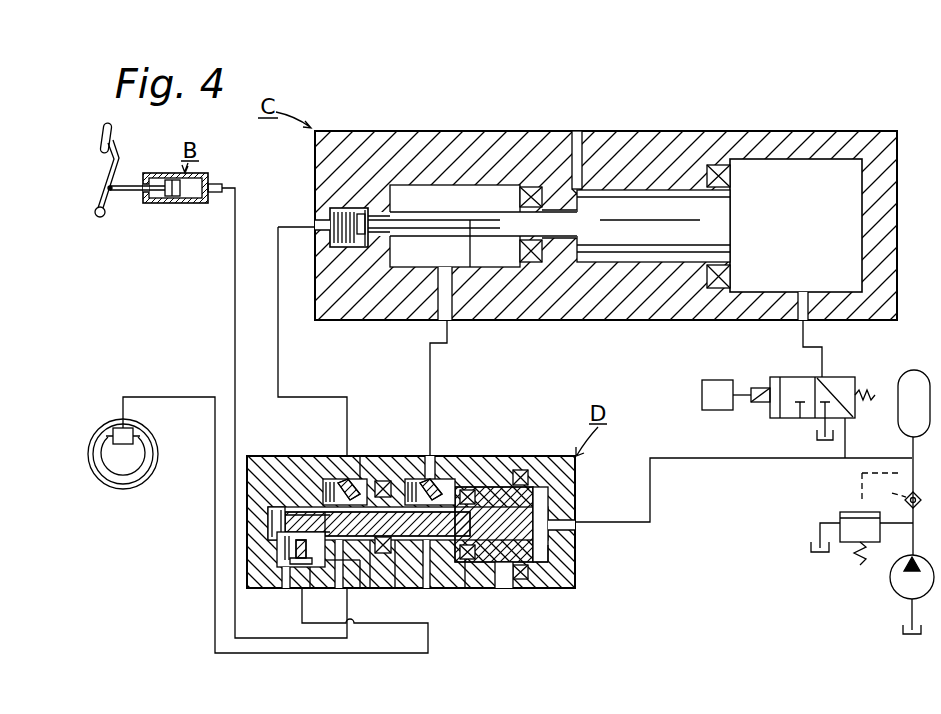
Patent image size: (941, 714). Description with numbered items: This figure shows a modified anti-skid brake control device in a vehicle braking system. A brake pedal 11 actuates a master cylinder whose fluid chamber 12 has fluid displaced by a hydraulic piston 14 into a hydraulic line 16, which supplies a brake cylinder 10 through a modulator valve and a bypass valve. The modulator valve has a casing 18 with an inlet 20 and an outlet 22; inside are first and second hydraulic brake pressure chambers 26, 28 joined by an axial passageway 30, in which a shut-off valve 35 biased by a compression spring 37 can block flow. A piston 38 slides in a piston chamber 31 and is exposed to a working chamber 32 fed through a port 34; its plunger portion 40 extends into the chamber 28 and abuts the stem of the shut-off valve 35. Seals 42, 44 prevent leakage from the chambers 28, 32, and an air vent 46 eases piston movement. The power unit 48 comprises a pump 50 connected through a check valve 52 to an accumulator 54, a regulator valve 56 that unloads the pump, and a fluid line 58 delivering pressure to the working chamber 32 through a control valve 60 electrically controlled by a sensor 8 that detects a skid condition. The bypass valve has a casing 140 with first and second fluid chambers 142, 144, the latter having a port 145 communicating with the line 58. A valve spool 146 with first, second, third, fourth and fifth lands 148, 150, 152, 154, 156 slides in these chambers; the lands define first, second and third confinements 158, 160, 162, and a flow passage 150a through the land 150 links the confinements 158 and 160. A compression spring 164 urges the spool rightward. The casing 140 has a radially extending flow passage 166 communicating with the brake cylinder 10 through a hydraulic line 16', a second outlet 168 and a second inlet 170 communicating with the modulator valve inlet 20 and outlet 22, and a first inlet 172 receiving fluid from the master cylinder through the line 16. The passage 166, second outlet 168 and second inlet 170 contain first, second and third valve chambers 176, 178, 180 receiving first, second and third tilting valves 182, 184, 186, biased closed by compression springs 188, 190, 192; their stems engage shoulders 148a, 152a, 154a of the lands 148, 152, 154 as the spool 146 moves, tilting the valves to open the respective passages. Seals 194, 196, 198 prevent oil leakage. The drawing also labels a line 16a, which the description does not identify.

The sensor 8 is at (725, 406).
The brake cylinder 10 is at (133, 430).
The brake pedal 11 is at (113, 135).
The fluid chamber 12 is at (192, 197).
The hydraulic piston 14 is at (168, 198).
The hydraulic line 16 is at (272, 413).
The hydraulic line 16' is at (275, 505).
The control line 16a is at (277, 227).
The casing 18 is at (452, 152).
The inlet 20 is at (330, 222).
The outlet 22 is at (447, 338).
The first hydraulic brake pressure chamber 26 is at (340, 245).
The second hydraulic brake pressure chamber 28 is at (488, 200).
The axial passageway 30 is at (372, 210).
The piston chamber 31 is at (640, 192).
The working chamber 32 is at (833, 168).
The port 34 is at (803, 333).
The shut-off valve 35 is at (358, 247).
The compression spring 37 is at (335, 213).
The piston 38 is at (660, 262).
The plunger portion 40 is at (488, 255).
The seal 42 is at (531, 190).
The seal 44 is at (718, 165).
The air vent 46 is at (578, 140).
The power unit 48 is at (899, 374).
The pump 50 is at (896, 590).
The check valve 52 is at (905, 497).
The accumulator 54 is at (900, 422).
The regulator valve 56 is at (850, 512).
The fluid line 58 is at (681, 458).
The control valve 60 is at (856, 372).
The casing 140 is at (345, 456).
The first fluid chamber 142 is at (441, 595).
The second fluid chamber 144 is at (550, 488).
The port 145 is at (550, 522).
The valve spool 146 is at (550, 540).
The first land 148 is at (285, 456).
The shoulder 148a is at (300, 456).
The second land 150 is at (355, 456).
The axially extending flow passage 150a is at (320, 574).
The third land 152 is at (360, 592).
The shoulder 152a is at (355, 592).
The fourth land 154 is at (520, 590).
The shoulder 154a is at (505, 600).
The fifth land 156 is at (560, 562).
The first confinement 158 is at (320, 458).
The second confinement 160 is at (285, 519).
The third confinement 162 is at (465, 600).
The compression spring 164 is at (268, 512).
The radially extending flow passage 166 is at (305, 572).
The second outlet 168 is at (385, 456).
The second inlet 170 is at (475, 456).
The first inlet 172 is at (340, 572).
The first valve chamber 176 is at (275, 558).
The second valve chamber 178 is at (365, 456).
The third valve chamber 180 is at (500, 500).
The first tilting valve 182 is at (286, 570).
The second tilting valve 184 is at (396, 456).
The third tilting valve 186 is at (442, 500).
The compression spring 188 is at (280, 548).
The compression spring 190 is at (440, 456).
The compression spring 192 is at (396, 590).
The seal 194 is at (370, 600).
The seal 196 is at (490, 590).
The seal 198 is at (545, 590).